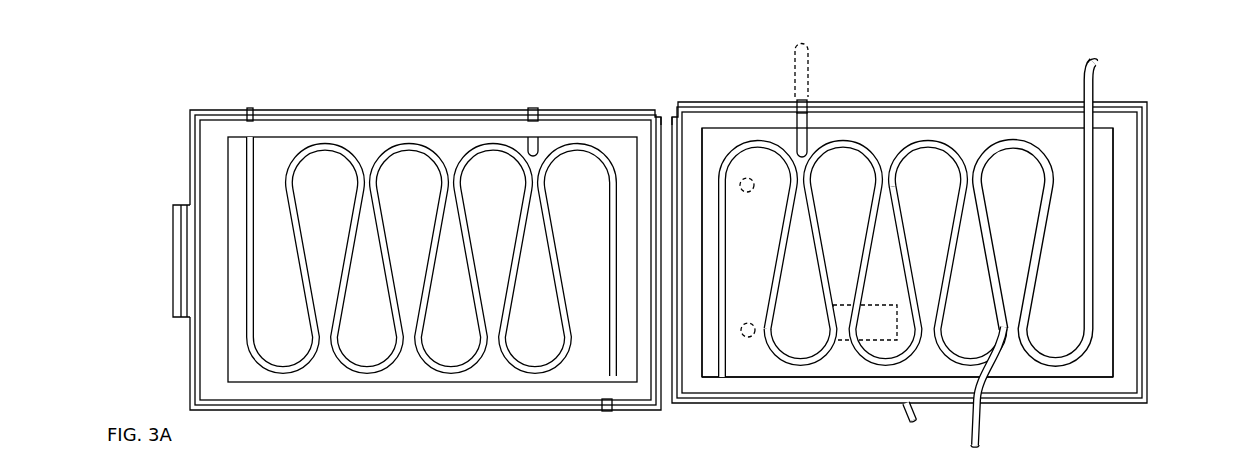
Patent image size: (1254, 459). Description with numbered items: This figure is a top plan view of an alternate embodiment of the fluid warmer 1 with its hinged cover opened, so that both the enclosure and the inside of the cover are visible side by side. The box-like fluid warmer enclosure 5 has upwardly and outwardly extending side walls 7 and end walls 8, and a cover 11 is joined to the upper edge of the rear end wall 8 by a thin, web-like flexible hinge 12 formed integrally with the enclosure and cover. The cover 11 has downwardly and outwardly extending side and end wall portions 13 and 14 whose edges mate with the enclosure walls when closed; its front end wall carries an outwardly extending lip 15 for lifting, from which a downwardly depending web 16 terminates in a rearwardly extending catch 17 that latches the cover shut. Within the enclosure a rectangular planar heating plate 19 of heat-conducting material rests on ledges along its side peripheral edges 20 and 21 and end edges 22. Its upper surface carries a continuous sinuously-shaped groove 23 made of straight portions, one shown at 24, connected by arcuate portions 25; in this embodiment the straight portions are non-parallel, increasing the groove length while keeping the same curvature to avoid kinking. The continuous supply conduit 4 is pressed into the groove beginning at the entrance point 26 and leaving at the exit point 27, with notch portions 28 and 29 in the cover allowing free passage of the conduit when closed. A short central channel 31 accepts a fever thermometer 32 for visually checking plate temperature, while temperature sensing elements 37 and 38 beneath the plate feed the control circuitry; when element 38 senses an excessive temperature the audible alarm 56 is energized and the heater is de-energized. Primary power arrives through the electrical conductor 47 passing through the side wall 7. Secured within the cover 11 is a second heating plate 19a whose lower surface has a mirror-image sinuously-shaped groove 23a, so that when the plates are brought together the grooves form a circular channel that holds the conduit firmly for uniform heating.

The fluid warmer 1 is at (612, 97).
The supply conduit 4 is at (984, 418).
The fluid warmer enclosure 5 is at (808, 106).
The side wall 7 is at (777, 104).
The end wall 8 is at (1141, 205).
The cover 11 is at (530, 108).
The hinge 12 is at (666, 110).
The cover side wall portion 13 is at (334, 110).
The cover end wall portion 14 is at (189, 152).
The lip 15 is at (172, 252).
The web 16 is at (181, 218).
The catch 17 is at (191, 297).
The heating plate 19 is at (982, 142).
The second heating plate 19a is at (497, 165).
The side peripheral edge 20 is at (1007, 122).
The side peripheral edge 21 is at (795, 388).
The end edge 22 is at (1114, 313).
The sinuously-shaped groove 23 is at (929, 140).
The sinuously-shaped groove 23a is at (409, 143).
The straight portion 24 is at (730, 252).
The arcuate portion 25 is at (752, 143).
The entrance point 26 is at (1094, 160).
The exit point 27 is at (729, 378).
The notch portion 28 is at (252, 108).
The notch portion 29 is at (609, 410).
The channel 31 is at (810, 142).
The fever thermometer 32 is at (811, 62).
The temperature sensing element 37 is at (754, 185).
The temperature sensing element 38 is at (756, 330).
The electrical conductor 47 is at (910, 419).
The audible alarm 56 is at (880, 343).